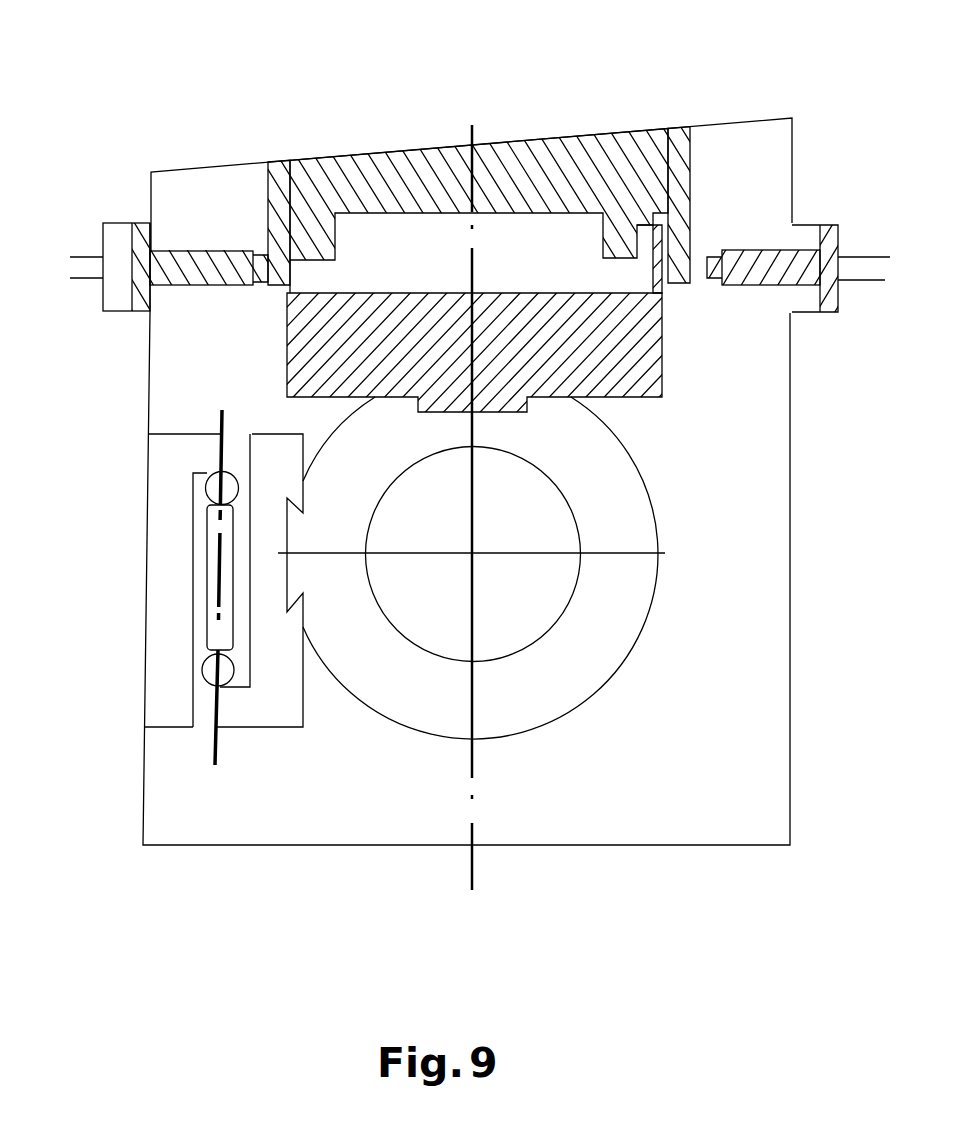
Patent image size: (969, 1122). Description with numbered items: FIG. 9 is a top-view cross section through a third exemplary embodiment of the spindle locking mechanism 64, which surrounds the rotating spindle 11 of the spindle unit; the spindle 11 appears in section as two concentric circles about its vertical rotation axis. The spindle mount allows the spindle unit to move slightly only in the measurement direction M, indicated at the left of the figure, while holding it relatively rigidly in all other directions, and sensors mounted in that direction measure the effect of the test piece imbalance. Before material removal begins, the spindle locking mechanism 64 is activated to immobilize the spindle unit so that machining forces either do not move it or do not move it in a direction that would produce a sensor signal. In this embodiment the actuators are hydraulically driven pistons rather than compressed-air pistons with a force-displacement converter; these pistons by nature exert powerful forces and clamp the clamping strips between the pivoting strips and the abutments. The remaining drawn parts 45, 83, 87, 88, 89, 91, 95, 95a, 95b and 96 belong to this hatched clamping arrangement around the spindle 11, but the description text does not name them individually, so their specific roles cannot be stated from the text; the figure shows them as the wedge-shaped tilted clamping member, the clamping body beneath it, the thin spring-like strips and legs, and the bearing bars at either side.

The spindle 11 is at (410, 708).
The adjusting device housing 45 is at (134, 562).
The spindle locking mechanism 64 is at (430, 126).
The bearing 83 is at (268, 262).
The clamping ring 87 is at (577, 190).
The clamping body 88 is at (638, 368).
The gap 89 is at (678, 263).
The groove 91 is at (307, 243).
The spring element 95 is at (268, 252).
The first spring leg 95a is at (292, 233).
The second spring leg 95b is at (313, 240).
The bearing 96 is at (190, 263).
The measurement direction M is at (215, 746).